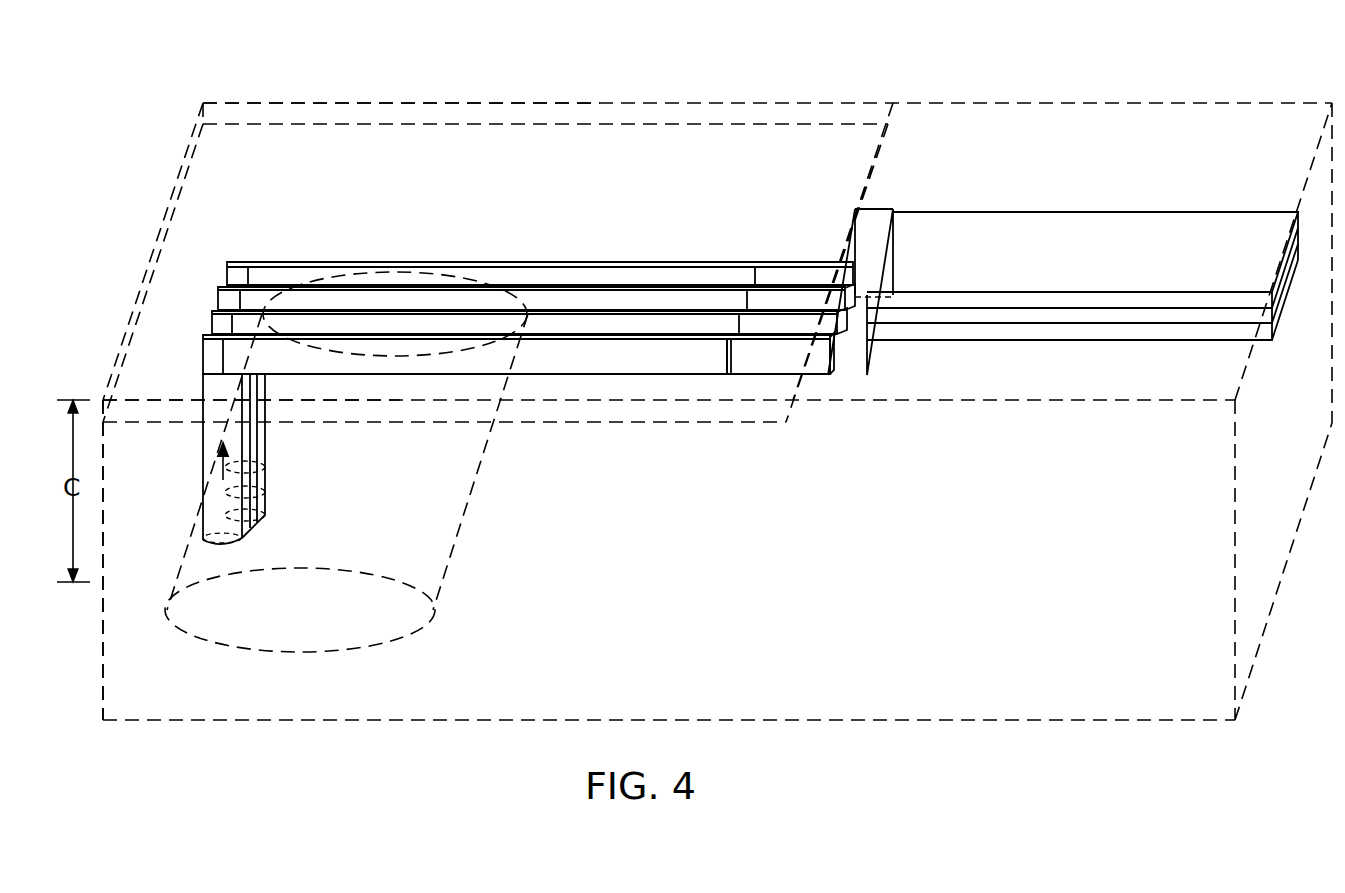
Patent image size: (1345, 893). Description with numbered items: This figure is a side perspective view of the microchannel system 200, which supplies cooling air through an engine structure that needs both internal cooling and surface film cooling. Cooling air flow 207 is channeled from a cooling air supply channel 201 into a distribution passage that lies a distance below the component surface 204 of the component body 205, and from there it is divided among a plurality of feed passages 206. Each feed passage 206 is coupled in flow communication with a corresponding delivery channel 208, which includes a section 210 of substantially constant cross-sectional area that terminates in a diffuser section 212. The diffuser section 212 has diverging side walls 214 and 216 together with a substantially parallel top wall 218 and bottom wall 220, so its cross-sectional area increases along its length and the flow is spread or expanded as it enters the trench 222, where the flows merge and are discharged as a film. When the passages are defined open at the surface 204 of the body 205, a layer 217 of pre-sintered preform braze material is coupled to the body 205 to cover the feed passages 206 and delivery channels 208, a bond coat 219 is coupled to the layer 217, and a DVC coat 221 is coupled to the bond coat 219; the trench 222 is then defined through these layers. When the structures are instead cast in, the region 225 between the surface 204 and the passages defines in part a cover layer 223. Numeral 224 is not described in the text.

The microchannel system 200 is at (362, 75).
The cooling air supply channel 201 is at (455, 489).
The component surface 204 is at (518, 180).
The component body 205 is at (958, 598).
The feed passages 206 is at (250, 517).
The cooling air flow 207 is at (213, 465).
The delivery channels 208 is at (325, 336).
The section 210 is at (576, 367).
The diffuser section 212 is at (796, 312).
The diverging side wall 214 is at (730, 320).
The diverging side wall 216 is at (752, 362).
The layer of pre-sintered preform braze material 217 is at (1143, 330).
The top wall 218 is at (812, 316).
The bond coat 219 is at (1043, 315).
The bottom wall 220 is at (790, 395).
The DVC coat 221 is at (933, 297).
The trench 222 is at (853, 217).
The cover layer 223 is at (127, 410).
The direction arrow 224 is at (875, 228).
The region 225 is at (245, 115).